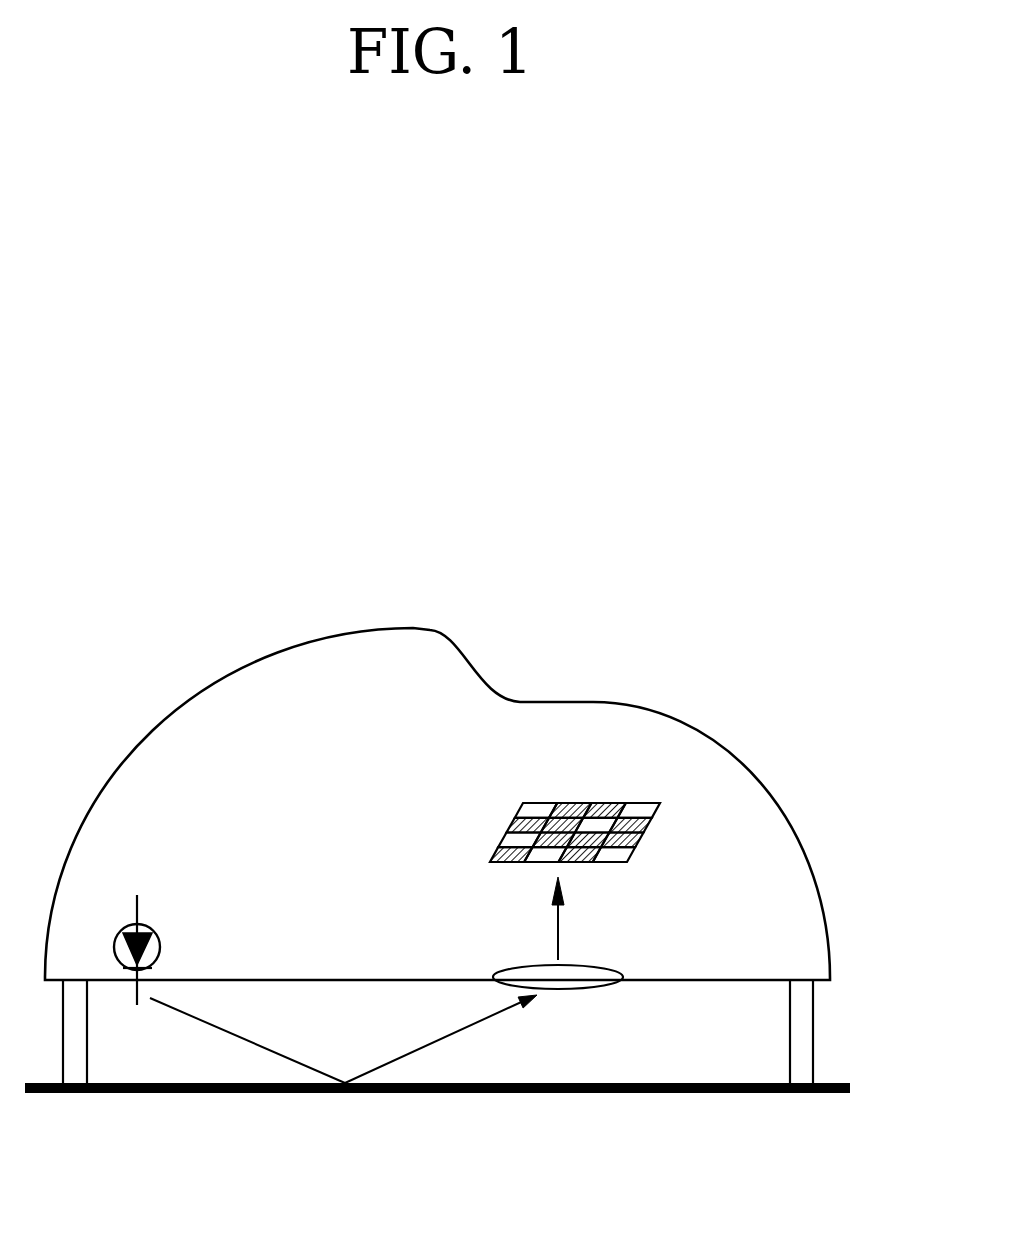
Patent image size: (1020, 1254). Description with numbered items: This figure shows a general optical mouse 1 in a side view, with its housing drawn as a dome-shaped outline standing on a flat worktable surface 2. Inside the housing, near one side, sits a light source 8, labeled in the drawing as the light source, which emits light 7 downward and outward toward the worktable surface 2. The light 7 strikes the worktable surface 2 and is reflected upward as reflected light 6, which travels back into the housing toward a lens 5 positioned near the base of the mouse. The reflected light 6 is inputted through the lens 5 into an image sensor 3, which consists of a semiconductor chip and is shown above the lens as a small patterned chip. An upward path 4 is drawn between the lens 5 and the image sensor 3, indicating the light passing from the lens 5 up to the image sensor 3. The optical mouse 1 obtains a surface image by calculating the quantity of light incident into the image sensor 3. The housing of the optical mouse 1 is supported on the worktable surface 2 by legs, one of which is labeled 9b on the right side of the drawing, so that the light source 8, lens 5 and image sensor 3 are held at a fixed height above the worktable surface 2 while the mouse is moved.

The optical mouse 1 is at (742, 753).
The worktable surface 2 is at (598, 1093).
The image sensor 3 is at (605, 800).
The reflected light path 4 is at (558, 915).
The lens 5 is at (610, 965).
The reflected light 6 is at (430, 1048).
The light 7 is at (250, 1040).
The light source 8 is at (160, 948).
The support leg 9b is at (805, 1027).